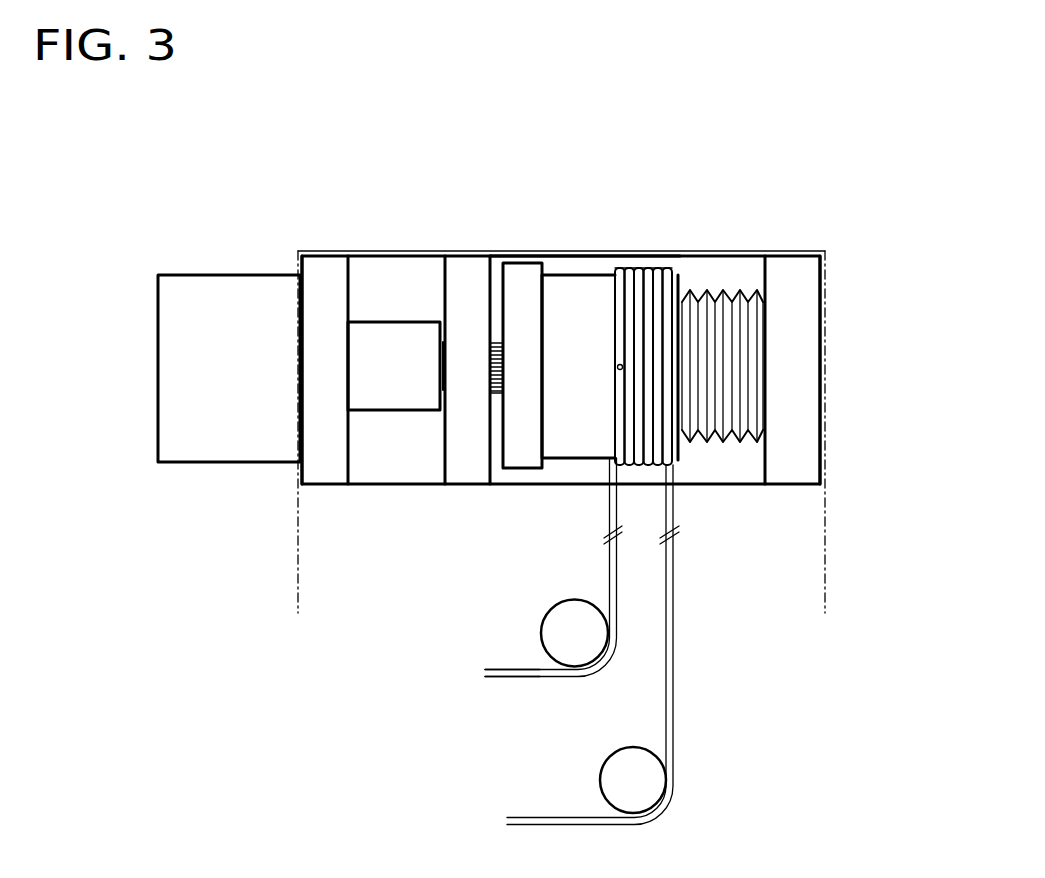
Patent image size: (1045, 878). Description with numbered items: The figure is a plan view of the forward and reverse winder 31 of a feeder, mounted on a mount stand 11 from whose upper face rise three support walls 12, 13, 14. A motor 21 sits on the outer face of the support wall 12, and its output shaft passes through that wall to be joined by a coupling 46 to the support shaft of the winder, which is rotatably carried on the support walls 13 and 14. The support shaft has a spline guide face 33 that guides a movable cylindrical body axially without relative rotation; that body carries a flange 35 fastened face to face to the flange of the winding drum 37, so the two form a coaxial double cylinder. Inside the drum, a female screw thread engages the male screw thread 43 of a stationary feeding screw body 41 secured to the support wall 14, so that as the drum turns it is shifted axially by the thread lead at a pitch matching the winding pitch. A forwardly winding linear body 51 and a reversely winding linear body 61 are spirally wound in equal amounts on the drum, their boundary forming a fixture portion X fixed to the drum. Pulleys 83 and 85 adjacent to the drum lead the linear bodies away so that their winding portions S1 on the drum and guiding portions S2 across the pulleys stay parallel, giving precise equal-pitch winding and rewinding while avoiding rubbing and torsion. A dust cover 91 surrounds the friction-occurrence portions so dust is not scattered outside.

The mount stand 11 is at (350, 490).
The support wall 12 is at (325, 293).
The support wall 13 is at (465, 293).
The support wall 14 is at (788, 298).
The motor 21 is at (198, 327).
The forward and reverse winder 31 is at (575, 260).
The guide face 33 is at (494, 343).
The flange 35 is at (518, 353).
The winding drum 37 is at (578, 440).
The stationary feeding screw body 41 is at (732, 372).
The male screw thread 43 is at (728, 297).
The coupling 46 is at (383, 352).
The forwardly winding linear body 51 is at (667, 330).
The reversely winding linear body 61 is at (522, 673).
The pulley 83 is at (632, 780).
The pulley 85 is at (560, 620).
The dust cover 91 is at (827, 337).
The winding portions S1 is at (667, 268).
The guiding portions S2 is at (613, 500).
The fixture portion X is at (620, 368).